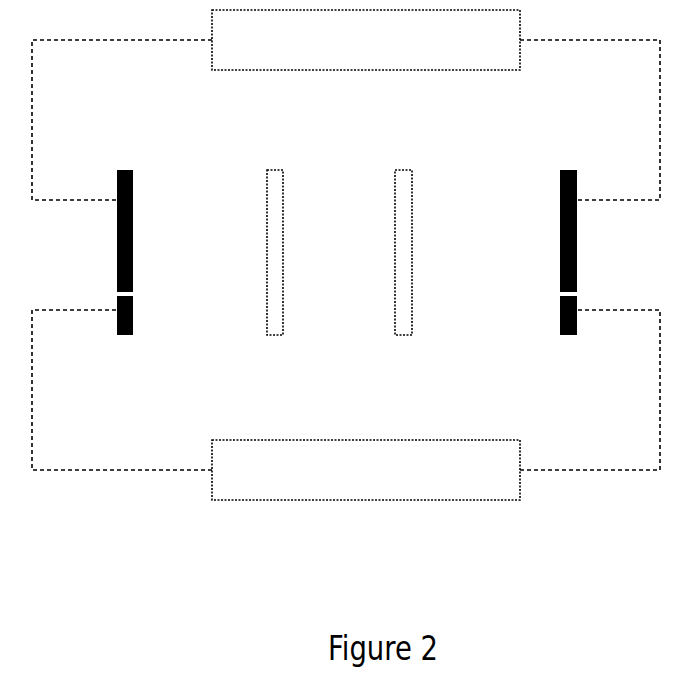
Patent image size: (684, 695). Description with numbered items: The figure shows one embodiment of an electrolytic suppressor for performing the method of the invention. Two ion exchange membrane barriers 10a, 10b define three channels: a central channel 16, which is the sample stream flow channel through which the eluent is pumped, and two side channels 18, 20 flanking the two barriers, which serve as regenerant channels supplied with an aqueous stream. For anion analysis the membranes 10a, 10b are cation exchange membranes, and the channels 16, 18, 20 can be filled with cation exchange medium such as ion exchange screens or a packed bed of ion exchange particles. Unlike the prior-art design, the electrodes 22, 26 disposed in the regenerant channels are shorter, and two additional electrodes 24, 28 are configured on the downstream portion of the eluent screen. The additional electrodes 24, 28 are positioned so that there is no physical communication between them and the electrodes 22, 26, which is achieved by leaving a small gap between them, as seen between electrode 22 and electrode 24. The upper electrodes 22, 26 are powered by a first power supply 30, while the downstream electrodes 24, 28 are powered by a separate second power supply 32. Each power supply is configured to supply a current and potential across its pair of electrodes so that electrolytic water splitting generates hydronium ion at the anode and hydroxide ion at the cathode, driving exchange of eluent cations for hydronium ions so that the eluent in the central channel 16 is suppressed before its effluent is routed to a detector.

The ion exchange membrane barrier 10a is at (281, 232).
The ion exchange membrane barrier 10b is at (409, 232).
The central channel 16 is at (356, 267).
The side channel 18 is at (196, 246).
The side channel 20 is at (498, 267).
The electrode 22 is at (128, 210).
The additional electrode 24 is at (120, 340).
The electrode 26 is at (569, 210).
The additional electrode 28 is at (568, 340).
The power supply 30 is at (478, 72).
The second power supply 32 is at (443, 502).